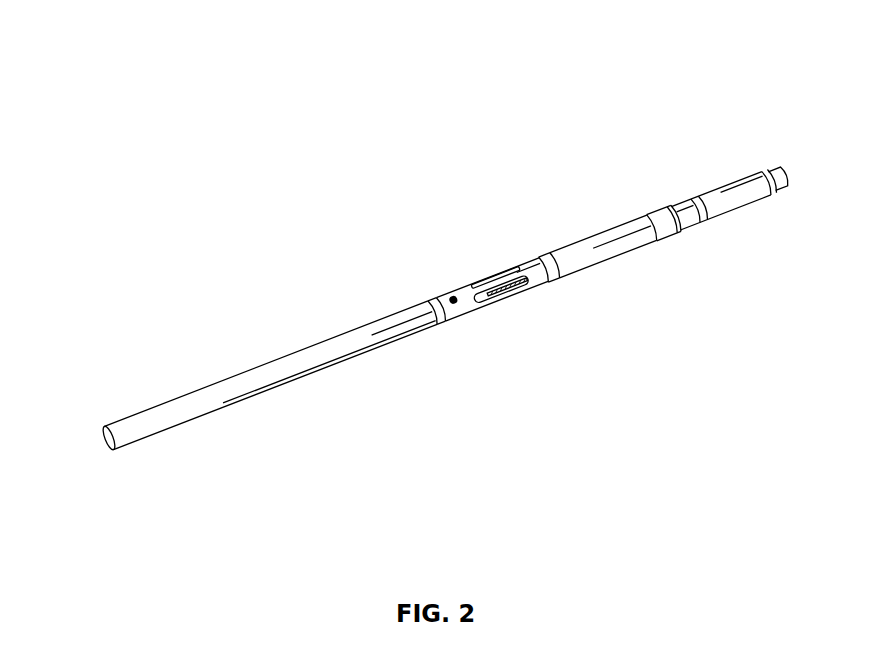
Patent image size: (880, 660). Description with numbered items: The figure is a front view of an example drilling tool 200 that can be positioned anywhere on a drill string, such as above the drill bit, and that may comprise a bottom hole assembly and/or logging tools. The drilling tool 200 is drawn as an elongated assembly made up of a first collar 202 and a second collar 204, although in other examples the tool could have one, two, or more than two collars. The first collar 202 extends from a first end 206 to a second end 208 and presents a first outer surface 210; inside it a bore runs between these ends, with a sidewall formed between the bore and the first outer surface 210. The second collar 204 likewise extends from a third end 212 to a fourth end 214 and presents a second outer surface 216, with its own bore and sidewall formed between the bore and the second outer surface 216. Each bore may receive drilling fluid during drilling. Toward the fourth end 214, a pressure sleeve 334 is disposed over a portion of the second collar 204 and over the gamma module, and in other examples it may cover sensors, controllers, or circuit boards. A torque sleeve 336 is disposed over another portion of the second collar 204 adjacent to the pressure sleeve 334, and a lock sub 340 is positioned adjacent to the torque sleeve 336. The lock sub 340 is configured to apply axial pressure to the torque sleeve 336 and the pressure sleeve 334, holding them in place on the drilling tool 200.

The drilling tool 200 is at (489, 97).
The first collar 202 is at (290, 353).
The second collar 204 is at (625, 223).
The first end 206 is at (103, 380).
The second end 208 is at (409, 290).
The first outer surface 210 is at (170, 398).
The third end 212 is at (437, 286).
The fourth end 214 is at (770, 142).
The second outer surface 216 is at (532, 254).
The pressure sleeve 334 is at (602, 262).
The torque sleeve 336 is at (666, 236).
The lock sub 340 is at (740, 207).